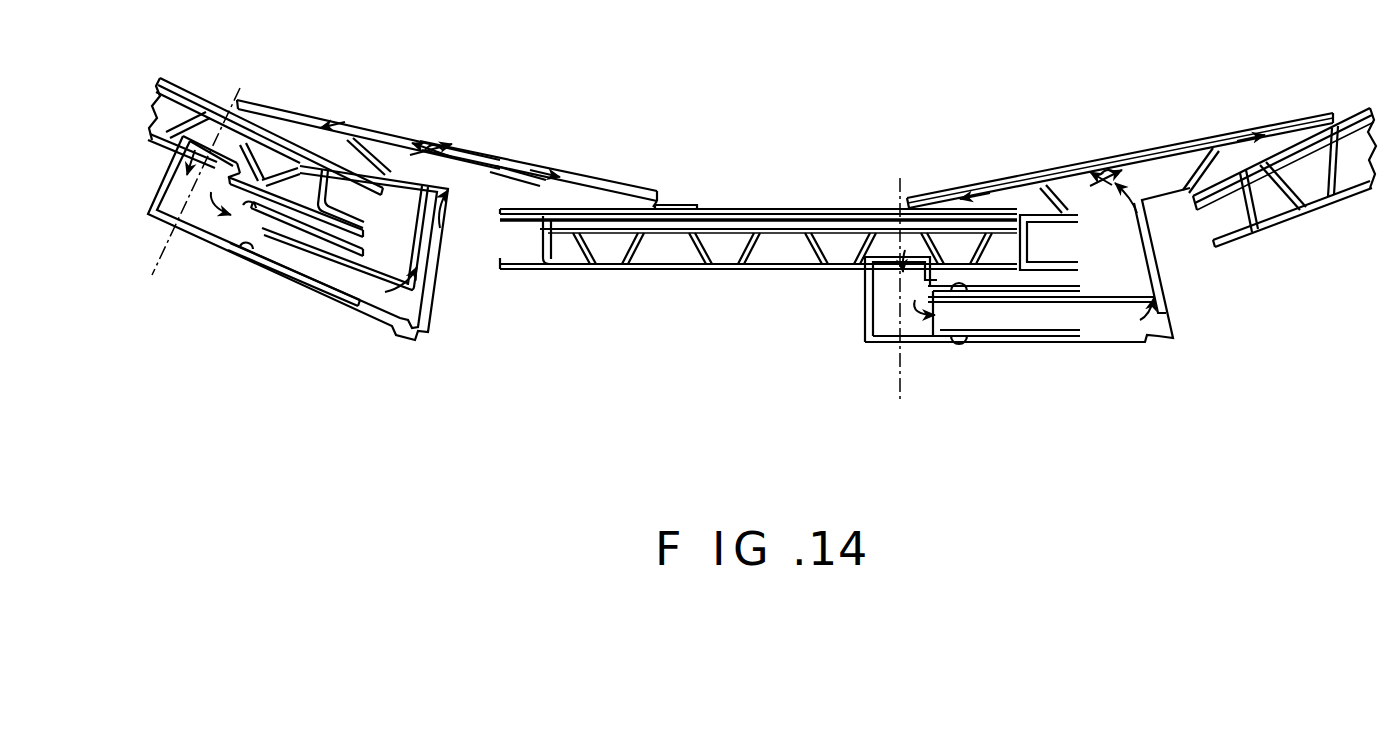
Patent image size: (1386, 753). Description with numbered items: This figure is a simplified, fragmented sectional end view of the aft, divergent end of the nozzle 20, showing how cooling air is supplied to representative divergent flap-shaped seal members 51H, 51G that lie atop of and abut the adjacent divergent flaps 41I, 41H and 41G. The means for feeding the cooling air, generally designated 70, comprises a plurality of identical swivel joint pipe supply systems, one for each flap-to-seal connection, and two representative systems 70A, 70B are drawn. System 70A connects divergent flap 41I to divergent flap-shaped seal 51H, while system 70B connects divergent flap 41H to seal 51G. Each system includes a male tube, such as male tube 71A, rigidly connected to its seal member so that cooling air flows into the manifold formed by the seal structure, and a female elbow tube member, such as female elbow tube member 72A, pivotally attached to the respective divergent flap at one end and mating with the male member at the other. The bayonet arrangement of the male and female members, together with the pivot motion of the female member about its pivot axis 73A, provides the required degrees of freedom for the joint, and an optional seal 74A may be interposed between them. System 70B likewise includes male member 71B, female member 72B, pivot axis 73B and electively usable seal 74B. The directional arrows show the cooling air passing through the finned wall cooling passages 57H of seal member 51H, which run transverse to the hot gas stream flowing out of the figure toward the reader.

The nozzle 20 is at (790, 72).
The divergent flap 41I is at (158, 148).
The divergent flap 41H is at (645, 272).
The divergent flap 41G is at (1332, 196).
The divergent flap-shaped seal member 51H is at (345, 121).
The divergent flap-shaped seal member 51G is at (1272, 118).
The finned wall cooling passages 57H is at (503, 163).
The means for feeding cooling air 70 is at (853, 432).
The swivel joint pipe supply system 70A is at (348, 223).
The swivel joint pipe supply system 70B is at (1068, 290).
The male tube 71A is at (392, 322).
The male member 71B is at (1173, 315).
The female elbow tube member 72A is at (208, 256).
The female member 72B is at (865, 316).
The pivot axis 73A is at (203, 179).
The pivot axis 73B is at (899, 290).
The seal 74A is at (248, 208).
The seal 74B is at (958, 295).